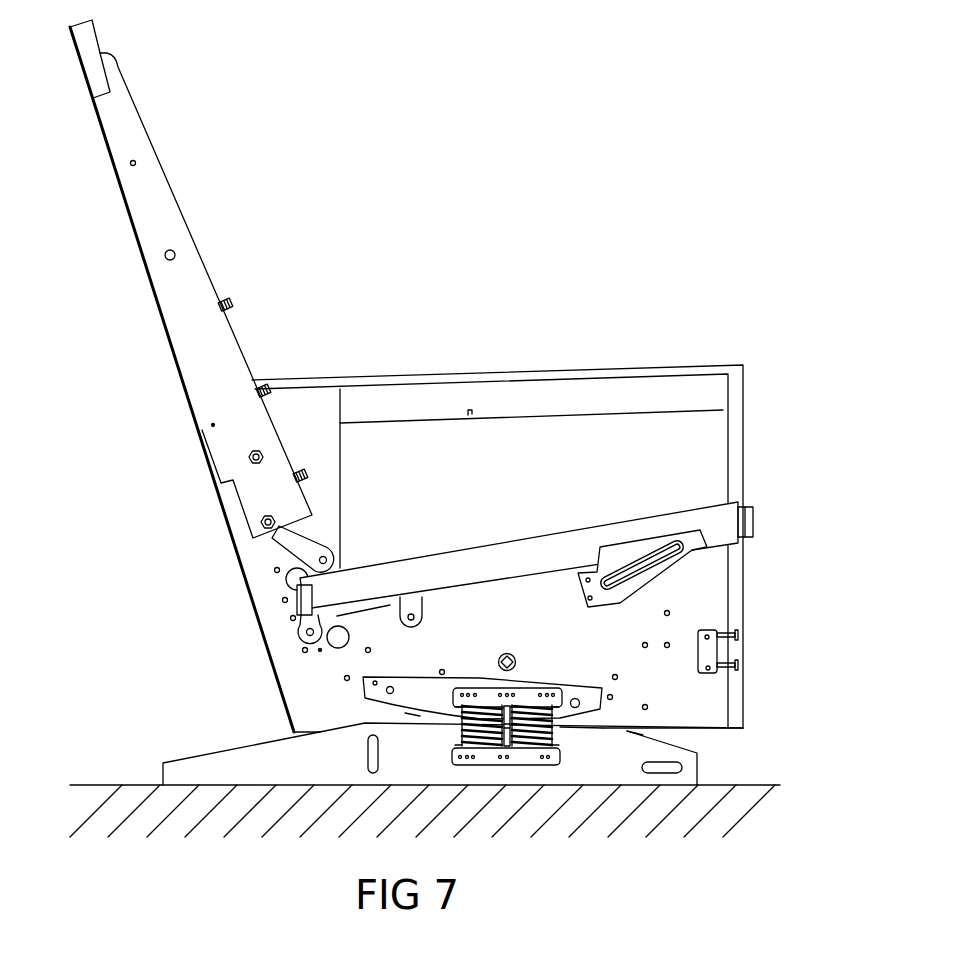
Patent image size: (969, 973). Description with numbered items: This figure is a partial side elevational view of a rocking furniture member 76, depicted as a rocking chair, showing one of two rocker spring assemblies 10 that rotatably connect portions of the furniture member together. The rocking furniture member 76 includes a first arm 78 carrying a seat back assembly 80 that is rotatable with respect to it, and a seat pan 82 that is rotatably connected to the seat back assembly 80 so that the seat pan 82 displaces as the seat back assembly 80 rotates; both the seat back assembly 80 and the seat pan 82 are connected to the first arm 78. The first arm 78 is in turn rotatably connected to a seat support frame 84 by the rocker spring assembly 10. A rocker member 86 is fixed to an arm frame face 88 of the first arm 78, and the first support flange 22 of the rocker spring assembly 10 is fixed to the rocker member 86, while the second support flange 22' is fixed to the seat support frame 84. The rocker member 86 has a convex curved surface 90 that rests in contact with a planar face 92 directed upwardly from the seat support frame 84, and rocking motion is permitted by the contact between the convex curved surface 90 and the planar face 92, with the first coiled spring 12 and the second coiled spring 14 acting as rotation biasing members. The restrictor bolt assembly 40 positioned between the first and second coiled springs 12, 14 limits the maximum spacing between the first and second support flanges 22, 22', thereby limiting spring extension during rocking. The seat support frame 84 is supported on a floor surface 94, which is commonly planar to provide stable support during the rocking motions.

The rocker spring assembly 10 is at (603, 666).
The first coiled spring 12 is at (463, 727).
The second coiled spring 14 is at (643, 735).
The first support flange 22 is at (507, 663).
The second support flange 22' is at (492, 792).
The restrictor bolt assembly 40 is at (512, 760).
The rocking furniture member 76 is at (683, 219).
The first arm 78 is at (697, 388).
The seat back assembly 80 is at (158, 288).
The seat pan 82 is at (710, 517).
The seat support frame 84 is at (223, 763).
The rocker member 86 is at (400, 677).
The arm frame face 88 is at (303, 703).
The convex curved surface 90 is at (406, 730).
The planar face 92 is at (608, 713).
The floor surface 94 is at (102, 787).